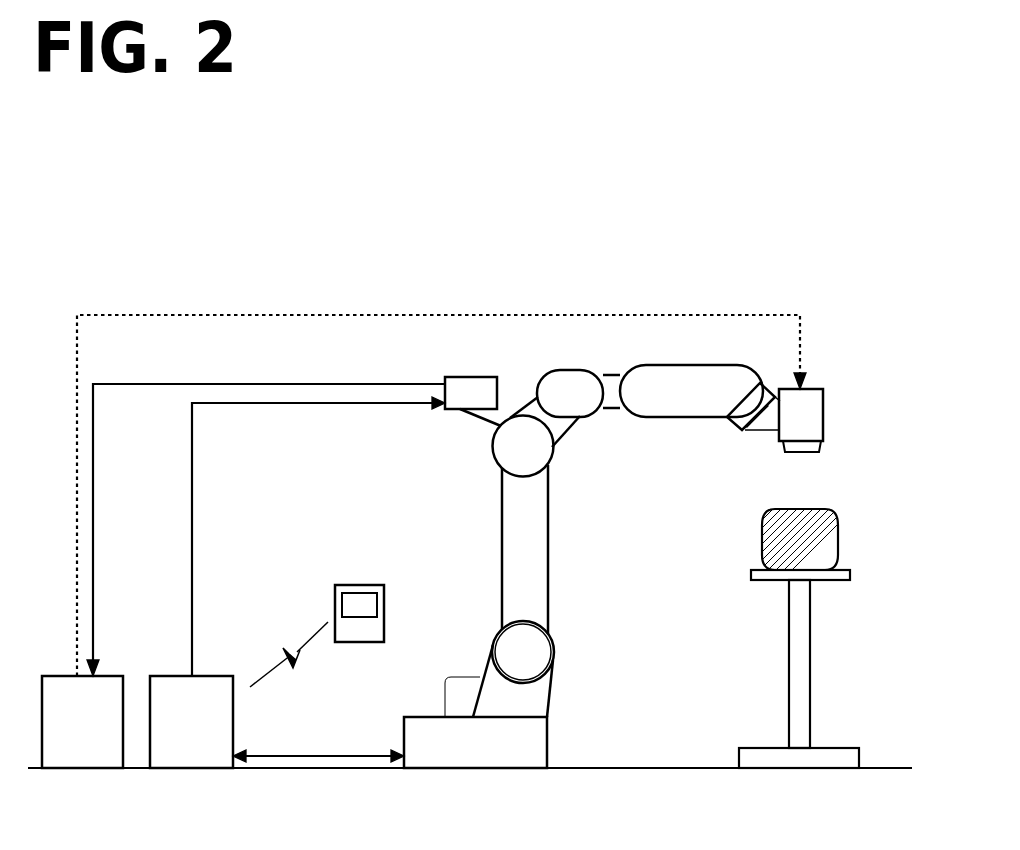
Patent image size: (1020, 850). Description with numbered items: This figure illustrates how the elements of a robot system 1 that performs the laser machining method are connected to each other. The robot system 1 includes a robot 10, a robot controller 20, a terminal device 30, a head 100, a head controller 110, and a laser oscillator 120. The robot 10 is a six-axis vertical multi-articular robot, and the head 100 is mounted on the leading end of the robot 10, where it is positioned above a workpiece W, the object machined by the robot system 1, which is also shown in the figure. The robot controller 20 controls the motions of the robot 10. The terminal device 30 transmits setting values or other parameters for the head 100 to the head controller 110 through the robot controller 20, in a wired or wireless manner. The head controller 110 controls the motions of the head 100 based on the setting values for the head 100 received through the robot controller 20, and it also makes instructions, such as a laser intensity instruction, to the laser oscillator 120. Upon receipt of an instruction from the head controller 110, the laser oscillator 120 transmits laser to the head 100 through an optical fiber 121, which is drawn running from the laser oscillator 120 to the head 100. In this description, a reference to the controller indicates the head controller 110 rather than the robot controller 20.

The robot system 1 is at (551, 268).
The robot 10 is at (594, 468).
The robot controller 20 is at (210, 676).
The terminal device 30 is at (372, 585).
The head 100 is at (800, 408).
The head controller 110 is at (472, 392).
The laser oscillator 120 is at (108, 676).
The optical fiber 121 is at (250, 315).
The workpiece W is at (834, 522).